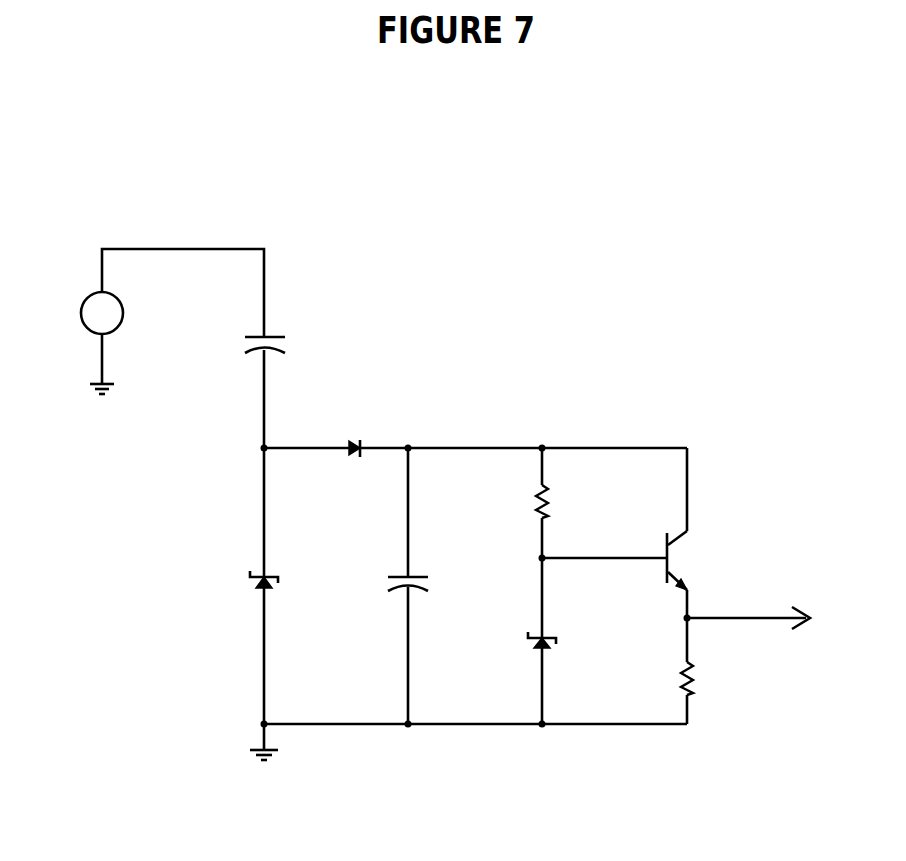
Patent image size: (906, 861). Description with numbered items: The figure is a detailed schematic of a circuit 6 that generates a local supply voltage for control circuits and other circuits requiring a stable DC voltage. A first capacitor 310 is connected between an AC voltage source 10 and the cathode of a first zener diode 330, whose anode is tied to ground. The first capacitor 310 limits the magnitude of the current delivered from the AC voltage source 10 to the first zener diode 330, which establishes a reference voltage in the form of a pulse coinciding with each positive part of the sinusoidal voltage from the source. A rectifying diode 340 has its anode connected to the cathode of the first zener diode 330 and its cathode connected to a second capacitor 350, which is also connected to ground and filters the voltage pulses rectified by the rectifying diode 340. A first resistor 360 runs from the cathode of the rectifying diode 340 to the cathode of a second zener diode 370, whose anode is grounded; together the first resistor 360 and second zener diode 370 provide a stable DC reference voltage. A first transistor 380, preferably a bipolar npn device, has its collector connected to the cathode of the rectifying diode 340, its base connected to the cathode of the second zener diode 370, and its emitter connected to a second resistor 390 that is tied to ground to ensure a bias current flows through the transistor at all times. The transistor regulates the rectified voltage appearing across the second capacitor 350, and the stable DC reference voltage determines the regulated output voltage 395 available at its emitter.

The circuit 6 is at (612, 288).
The AC voltage source 10 is at (80, 302).
The first capacitor 310 is at (273, 333).
The first zener diode 330 is at (256, 584).
The rectifying diode 340 is at (364, 442).
The second capacitor 350 is at (415, 573).
The first resistor 360 is at (548, 512).
The second zener diode 370 is at (548, 637).
The first transistor 380 is at (673, 570).
The second resistor 390 is at (692, 686).
The regulated output voltage 395 is at (745, 616).